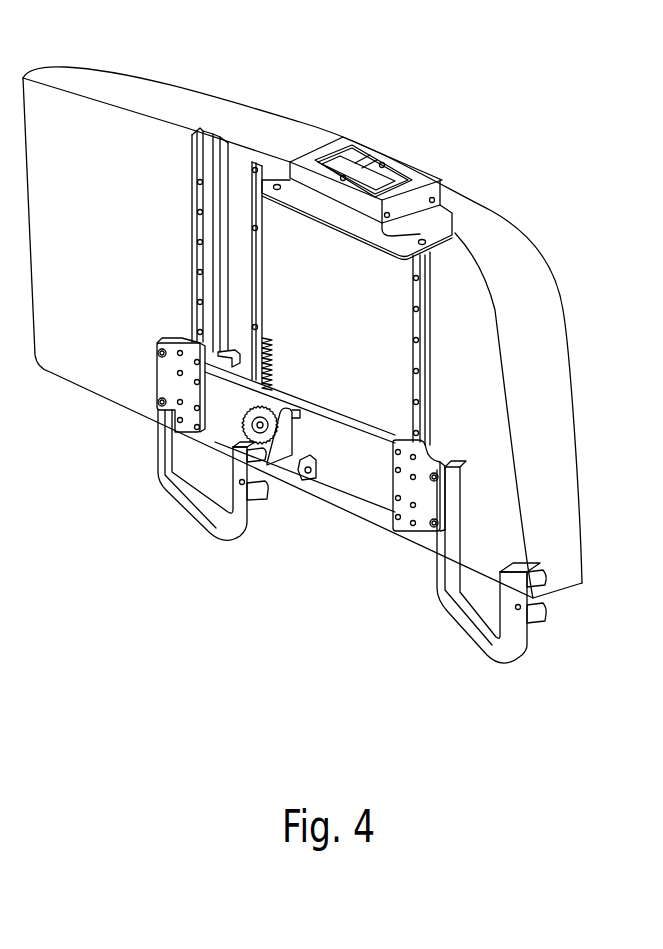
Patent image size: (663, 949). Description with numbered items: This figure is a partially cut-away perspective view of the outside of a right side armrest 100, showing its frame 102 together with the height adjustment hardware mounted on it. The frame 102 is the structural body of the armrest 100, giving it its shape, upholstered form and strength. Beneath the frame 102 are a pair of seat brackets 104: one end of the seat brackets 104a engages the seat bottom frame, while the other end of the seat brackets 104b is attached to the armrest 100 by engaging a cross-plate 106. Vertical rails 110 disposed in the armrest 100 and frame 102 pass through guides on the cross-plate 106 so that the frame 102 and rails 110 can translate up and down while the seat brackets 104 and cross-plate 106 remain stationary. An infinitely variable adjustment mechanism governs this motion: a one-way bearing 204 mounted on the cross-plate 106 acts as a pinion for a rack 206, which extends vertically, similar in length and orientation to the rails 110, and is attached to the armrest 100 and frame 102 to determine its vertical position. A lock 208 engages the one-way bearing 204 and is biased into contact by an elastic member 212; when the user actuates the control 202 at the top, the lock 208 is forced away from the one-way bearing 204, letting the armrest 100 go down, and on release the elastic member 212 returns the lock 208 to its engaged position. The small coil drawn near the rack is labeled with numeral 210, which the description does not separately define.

The armrest 100 is at (487, 54).
The frame 102 is at (103, 88).
The seat brackets 104 is at (198, 530).
The one end of the seat brackets 104a is at (265, 519).
The other end of the seat brackets 104b is at (144, 425).
The cross-plate 106 is at (362, 465).
The rails 110 is at (192, 135).
The control 202 is at (395, 183).
The one-way bearing 204 is at (268, 412).
The rack 206 is at (263, 302).
The lock 208 is at (276, 404).
The spring 210 is at (274, 347).
The elastic member 212 is at (247, 447).